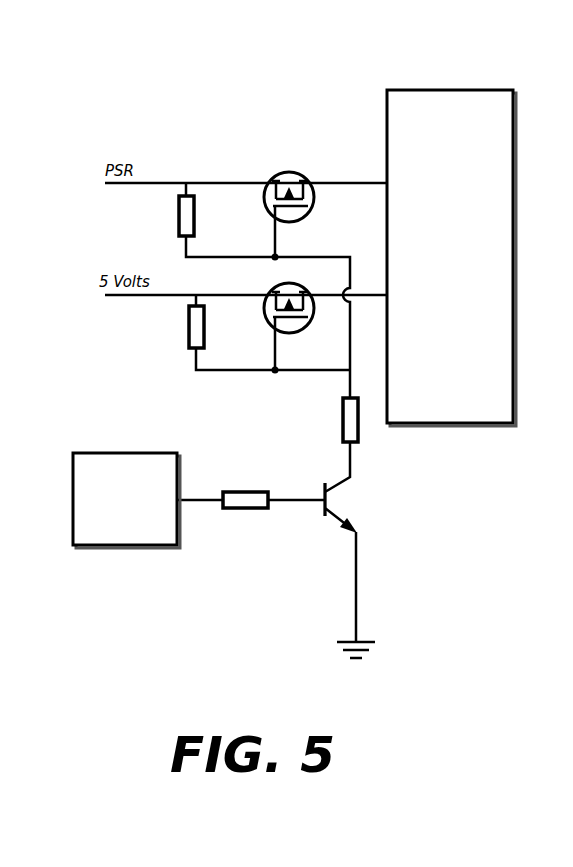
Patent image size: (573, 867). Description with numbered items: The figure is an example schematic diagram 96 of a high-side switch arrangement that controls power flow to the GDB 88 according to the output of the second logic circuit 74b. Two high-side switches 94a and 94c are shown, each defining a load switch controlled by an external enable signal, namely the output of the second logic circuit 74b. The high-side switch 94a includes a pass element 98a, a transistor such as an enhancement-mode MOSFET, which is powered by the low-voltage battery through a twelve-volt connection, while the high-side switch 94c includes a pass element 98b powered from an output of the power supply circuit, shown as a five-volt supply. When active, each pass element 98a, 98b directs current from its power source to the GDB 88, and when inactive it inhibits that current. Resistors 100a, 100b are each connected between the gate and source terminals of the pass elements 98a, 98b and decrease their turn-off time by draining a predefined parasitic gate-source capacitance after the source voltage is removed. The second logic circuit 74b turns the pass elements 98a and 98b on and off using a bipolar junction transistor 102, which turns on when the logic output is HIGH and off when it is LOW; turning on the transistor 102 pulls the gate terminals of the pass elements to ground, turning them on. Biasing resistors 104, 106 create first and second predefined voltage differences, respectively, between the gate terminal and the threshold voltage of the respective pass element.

The schematic diagram 96 is at (150, 76).
The high-side switch 94a is at (315, 154).
The pass element 98a is at (314, 202).
The pass element 98b is at (313, 320).
The high-side switch 94c is at (216, 400).
The resistor 100a is at (178, 214).
The resistor 100b is at (188, 323).
The bipolar junction transistor 102 is at (322, 492).
The biasing resistor 104 is at (242, 492).
The biasing resistor 106 is at (342, 420).
The GDB 88 is at (451, 258).
The second logic circuit 74b is at (126, 500).